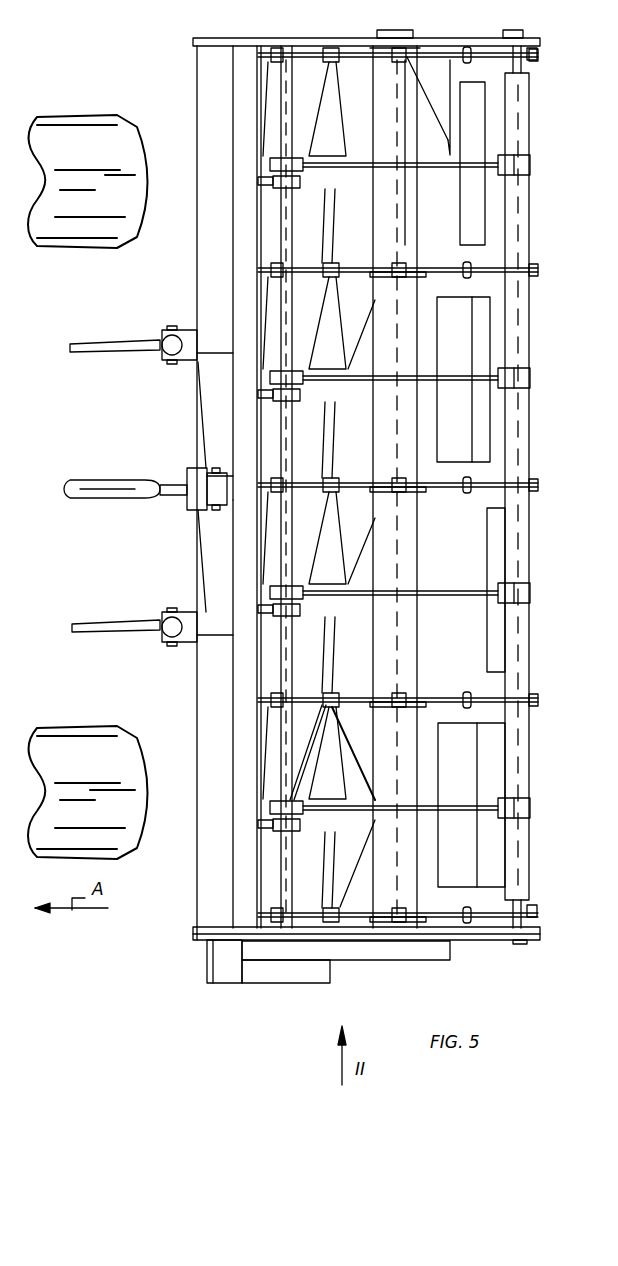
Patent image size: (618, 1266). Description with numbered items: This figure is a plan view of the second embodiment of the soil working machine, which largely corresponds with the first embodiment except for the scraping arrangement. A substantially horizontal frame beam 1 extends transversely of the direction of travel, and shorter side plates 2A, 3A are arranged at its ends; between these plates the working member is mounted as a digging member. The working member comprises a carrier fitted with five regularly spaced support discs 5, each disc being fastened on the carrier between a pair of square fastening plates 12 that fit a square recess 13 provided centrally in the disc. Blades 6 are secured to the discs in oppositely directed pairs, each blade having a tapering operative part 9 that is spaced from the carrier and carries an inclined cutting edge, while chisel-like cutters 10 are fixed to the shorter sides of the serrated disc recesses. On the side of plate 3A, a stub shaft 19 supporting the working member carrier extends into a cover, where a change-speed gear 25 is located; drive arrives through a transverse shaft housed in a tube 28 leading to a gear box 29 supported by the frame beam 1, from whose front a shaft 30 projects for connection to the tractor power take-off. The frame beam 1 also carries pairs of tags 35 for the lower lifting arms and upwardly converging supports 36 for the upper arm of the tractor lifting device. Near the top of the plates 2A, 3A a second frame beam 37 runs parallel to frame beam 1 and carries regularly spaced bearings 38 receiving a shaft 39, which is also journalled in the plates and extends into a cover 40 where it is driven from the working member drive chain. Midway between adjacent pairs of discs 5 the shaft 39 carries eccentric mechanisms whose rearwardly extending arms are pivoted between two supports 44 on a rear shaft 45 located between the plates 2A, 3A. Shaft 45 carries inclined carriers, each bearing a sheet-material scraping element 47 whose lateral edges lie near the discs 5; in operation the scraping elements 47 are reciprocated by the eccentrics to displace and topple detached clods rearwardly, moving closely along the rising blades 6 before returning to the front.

The frame beam 1 is at (200, 695).
The side plate 2A is at (385, 40).
The side plate 3A is at (485, 935).
The support disc 5 is at (352, 45).
The blade 6 is at (403, 73).
The operative part 9 is at (257, 93).
The cutter 10 is at (330, 63).
The fastening plate 12 is at (295, 160).
The square recess 13 is at (355, 160).
The stub shaft 19 is at (392, 932).
The change-speed gear 25 is at (260, 975).
The tube 28 is at (233, 875).
The gear box 29 is at (192, 468).
The shaft 30 is at (180, 505).
The tag 35 is at (165, 328).
The support 36 is at (205, 386).
The frame beam 37 is at (233, 258).
The bearing 38 is at (300, 185).
The shaft 39 is at (292, 420).
The cover 40 is at (405, 955).
The support 44 is at (532, 160).
The shaft 45 is at (528, 925).
The scraping element 47 is at (478, 128).